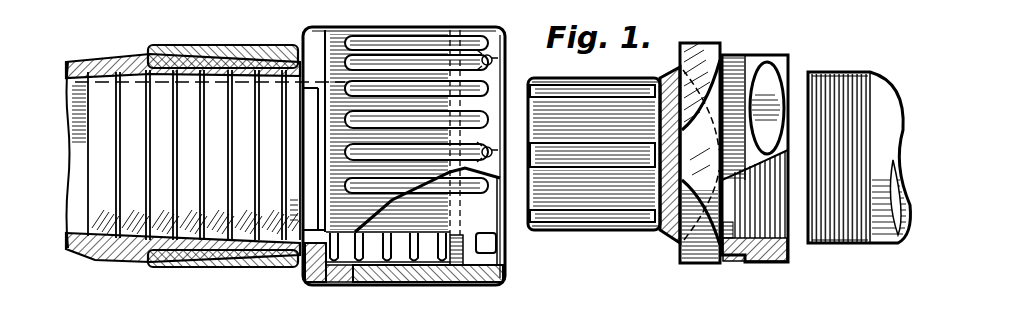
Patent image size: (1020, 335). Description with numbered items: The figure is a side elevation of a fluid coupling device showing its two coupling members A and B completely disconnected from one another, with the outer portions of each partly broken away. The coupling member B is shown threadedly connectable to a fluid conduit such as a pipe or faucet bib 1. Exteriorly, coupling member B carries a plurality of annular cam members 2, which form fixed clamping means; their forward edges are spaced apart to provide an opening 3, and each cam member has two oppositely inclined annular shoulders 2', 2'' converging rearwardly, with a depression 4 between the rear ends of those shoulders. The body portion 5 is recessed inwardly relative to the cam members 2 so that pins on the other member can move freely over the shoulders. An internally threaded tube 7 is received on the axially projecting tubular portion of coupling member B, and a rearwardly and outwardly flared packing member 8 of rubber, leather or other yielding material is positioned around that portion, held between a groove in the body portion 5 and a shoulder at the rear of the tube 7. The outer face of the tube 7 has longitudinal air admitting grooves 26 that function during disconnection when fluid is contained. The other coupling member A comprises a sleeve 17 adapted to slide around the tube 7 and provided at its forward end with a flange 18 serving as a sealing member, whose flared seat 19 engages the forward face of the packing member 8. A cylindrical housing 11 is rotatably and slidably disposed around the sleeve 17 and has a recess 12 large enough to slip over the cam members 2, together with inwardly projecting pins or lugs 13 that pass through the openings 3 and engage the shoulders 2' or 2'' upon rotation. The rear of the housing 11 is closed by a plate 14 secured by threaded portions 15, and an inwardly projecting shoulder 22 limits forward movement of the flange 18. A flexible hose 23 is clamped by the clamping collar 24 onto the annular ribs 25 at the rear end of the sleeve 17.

The faucet bib 1 is at (859, 157).
The annular cam members 2 is at (703, 169).
The inclined annular shoulder 2' is at (699, 134).
The inclined annular shoulder 2'' is at (697, 176).
The opening 3 is at (685, 152).
The depression 4 is at (745, 52).
The body portion 5 is at (750, 62).
The tube 7 is at (594, 154).
The packing member 8 is at (665, 238).
The housing 11 is at (460, 50).
The recess 12 is at (497, 232).
The pins or lugs 13 is at (498, 62).
The plate 14 is at (313, 40).
The threaded portions 15 is at (345, 273).
The sleeve 17 is at (440, 218).
The flange 18 is at (478, 206).
The seat 19 is at (486, 233).
The shoulder 22 is at (472, 272).
The hose 23 is at (119, 260).
The clamping collar 24 is at (193, 263).
The annular ribs 25 is at (153, 268).
The air admitting grooves 26 is at (567, 92).
The coupling member A is at (261, 284).
The coupling member B is at (764, 275).